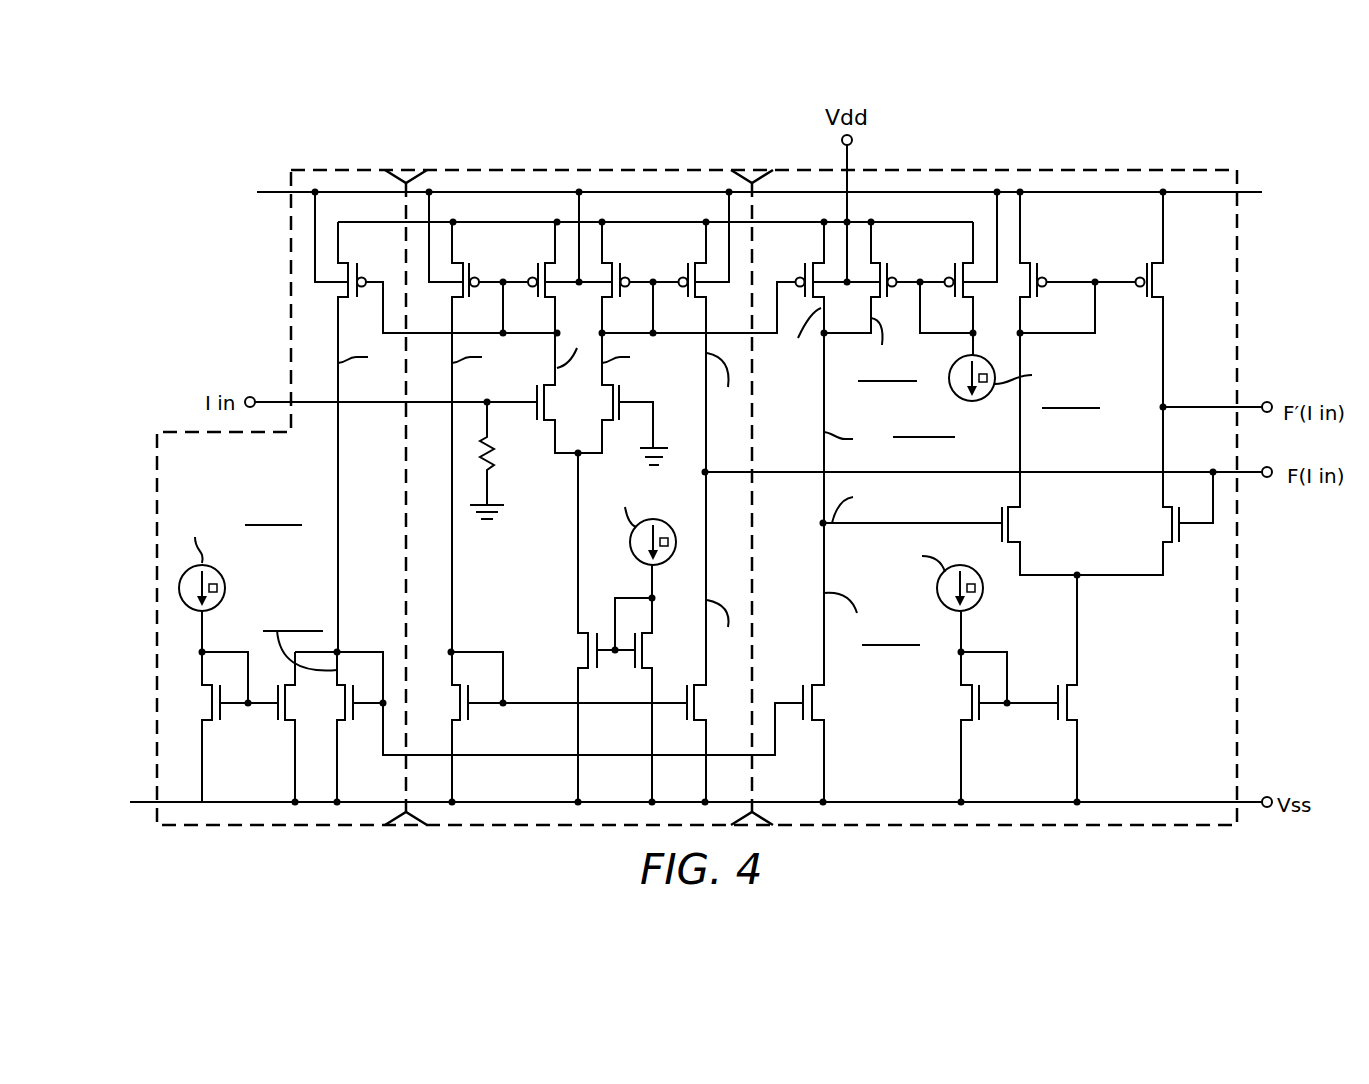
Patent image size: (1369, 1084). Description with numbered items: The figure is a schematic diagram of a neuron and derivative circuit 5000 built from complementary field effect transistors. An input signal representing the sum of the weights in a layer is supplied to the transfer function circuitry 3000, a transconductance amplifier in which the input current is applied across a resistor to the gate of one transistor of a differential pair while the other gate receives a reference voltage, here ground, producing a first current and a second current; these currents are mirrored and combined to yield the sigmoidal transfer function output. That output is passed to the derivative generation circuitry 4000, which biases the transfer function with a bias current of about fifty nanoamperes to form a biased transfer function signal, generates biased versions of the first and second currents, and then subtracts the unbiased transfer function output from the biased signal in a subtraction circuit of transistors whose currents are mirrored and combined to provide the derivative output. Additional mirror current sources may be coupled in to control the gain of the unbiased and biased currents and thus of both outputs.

The current amplifier / transfer circuit 5000 is at (226, 231).
The derivative generation circuitry 4000 is at (357, 168).
The transfer function circuitry 3000 is at (627, 168).